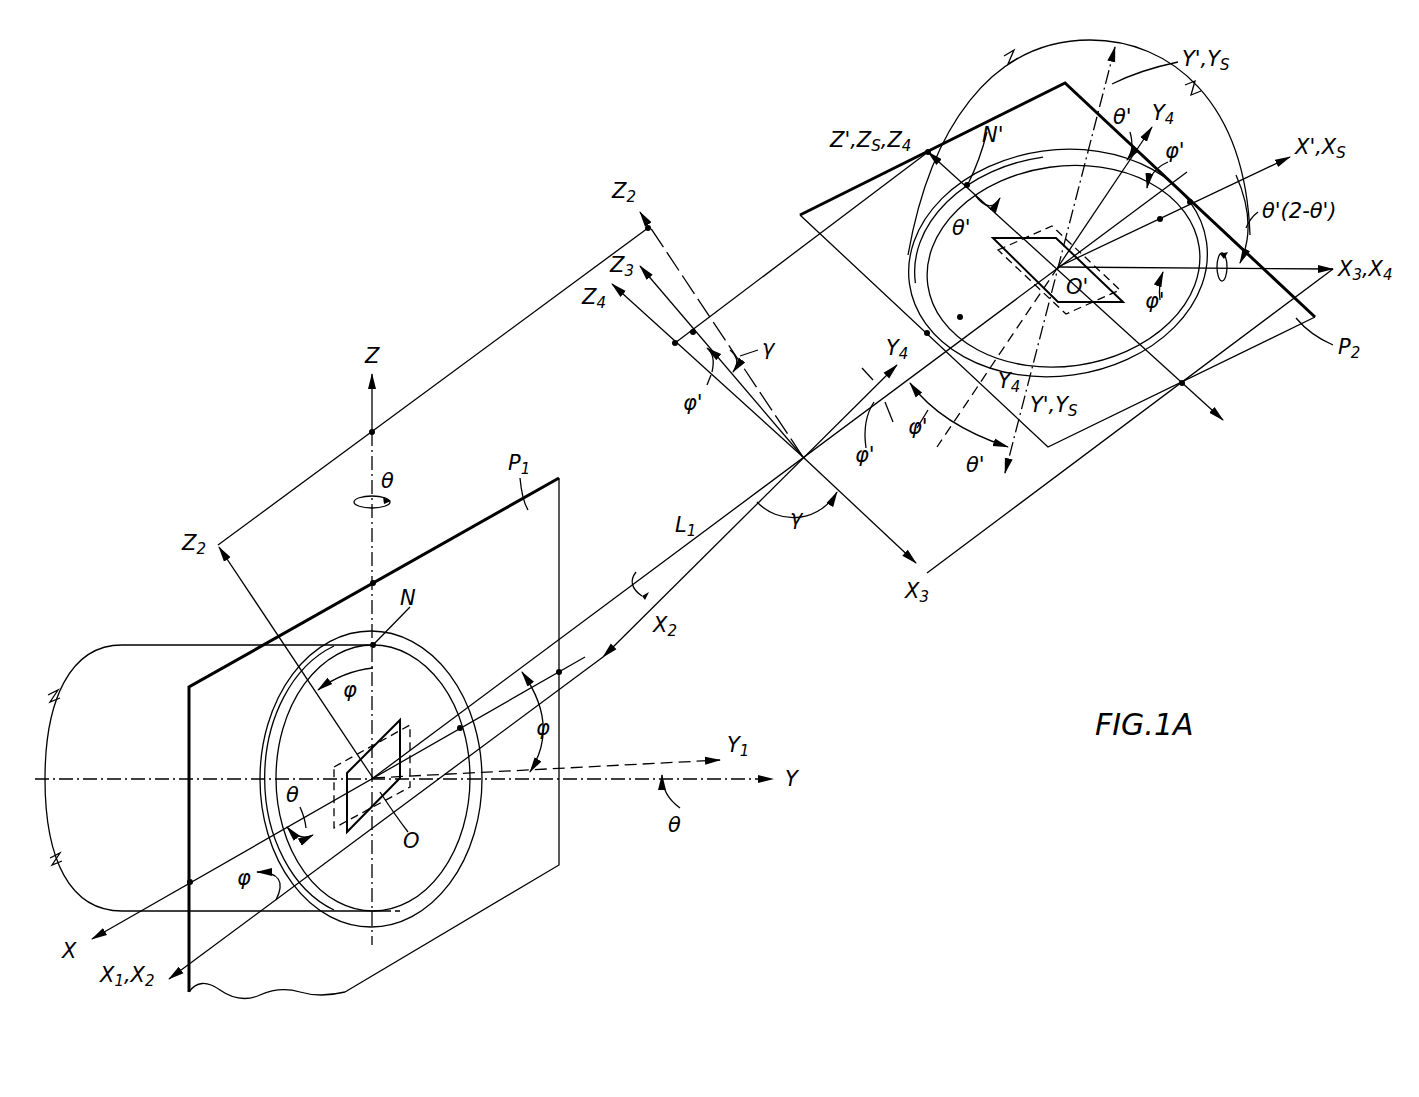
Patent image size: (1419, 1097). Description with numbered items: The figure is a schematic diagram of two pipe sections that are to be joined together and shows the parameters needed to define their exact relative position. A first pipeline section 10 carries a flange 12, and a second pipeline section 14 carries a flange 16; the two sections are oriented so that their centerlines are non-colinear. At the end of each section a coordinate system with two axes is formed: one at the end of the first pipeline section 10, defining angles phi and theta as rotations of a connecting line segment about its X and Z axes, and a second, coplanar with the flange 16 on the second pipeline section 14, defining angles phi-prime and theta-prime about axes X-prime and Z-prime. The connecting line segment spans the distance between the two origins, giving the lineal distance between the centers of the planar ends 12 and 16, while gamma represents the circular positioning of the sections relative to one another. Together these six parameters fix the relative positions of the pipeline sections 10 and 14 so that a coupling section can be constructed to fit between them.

The first pipeline section 10 is at (122, 646).
The flange 12 is at (442, 676).
The second pipeline section 14 is at (1217, 116).
The flange 16 is at (1188, 334).